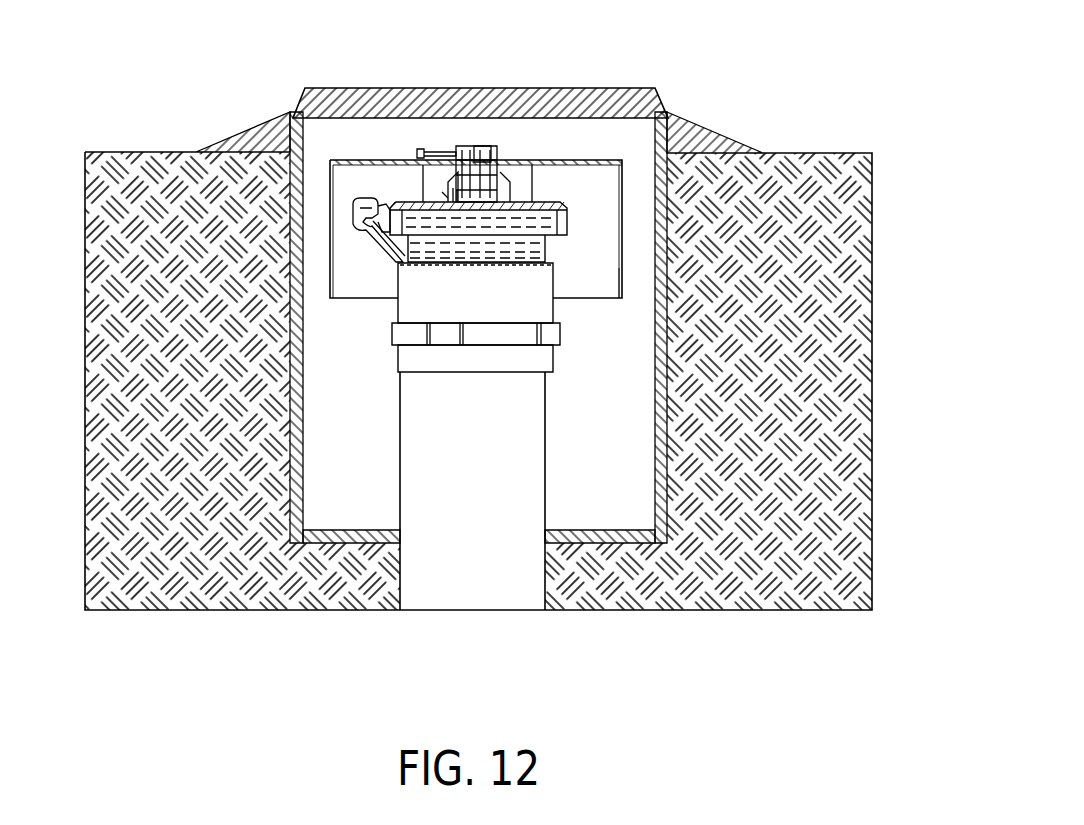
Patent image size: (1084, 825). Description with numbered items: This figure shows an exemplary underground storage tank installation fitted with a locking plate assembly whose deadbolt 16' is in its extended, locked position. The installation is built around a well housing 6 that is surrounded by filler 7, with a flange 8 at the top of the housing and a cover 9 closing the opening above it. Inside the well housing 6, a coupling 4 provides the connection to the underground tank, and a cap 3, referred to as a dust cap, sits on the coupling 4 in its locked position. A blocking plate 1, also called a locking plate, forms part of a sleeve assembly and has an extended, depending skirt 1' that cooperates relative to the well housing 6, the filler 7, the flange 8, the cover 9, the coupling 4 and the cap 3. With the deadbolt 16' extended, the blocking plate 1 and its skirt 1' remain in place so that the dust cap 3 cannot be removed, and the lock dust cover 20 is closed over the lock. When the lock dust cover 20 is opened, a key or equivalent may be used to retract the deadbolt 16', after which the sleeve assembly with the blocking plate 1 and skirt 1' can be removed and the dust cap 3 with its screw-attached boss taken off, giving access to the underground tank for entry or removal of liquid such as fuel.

The blocking plate 1 is at (476, 216).
The extended skirt 1' is at (599, 273).
The cap 3 is at (558, 208).
The coupling 4 is at (398, 306).
The well housing 6 is at (580, 537).
The filler 7 is at (752, 580).
The flange 8 is at (695, 140).
The cover 9 is at (358, 100).
The deadbolt 16' is at (446, 114).
The lock dust cover 20 is at (478, 147).